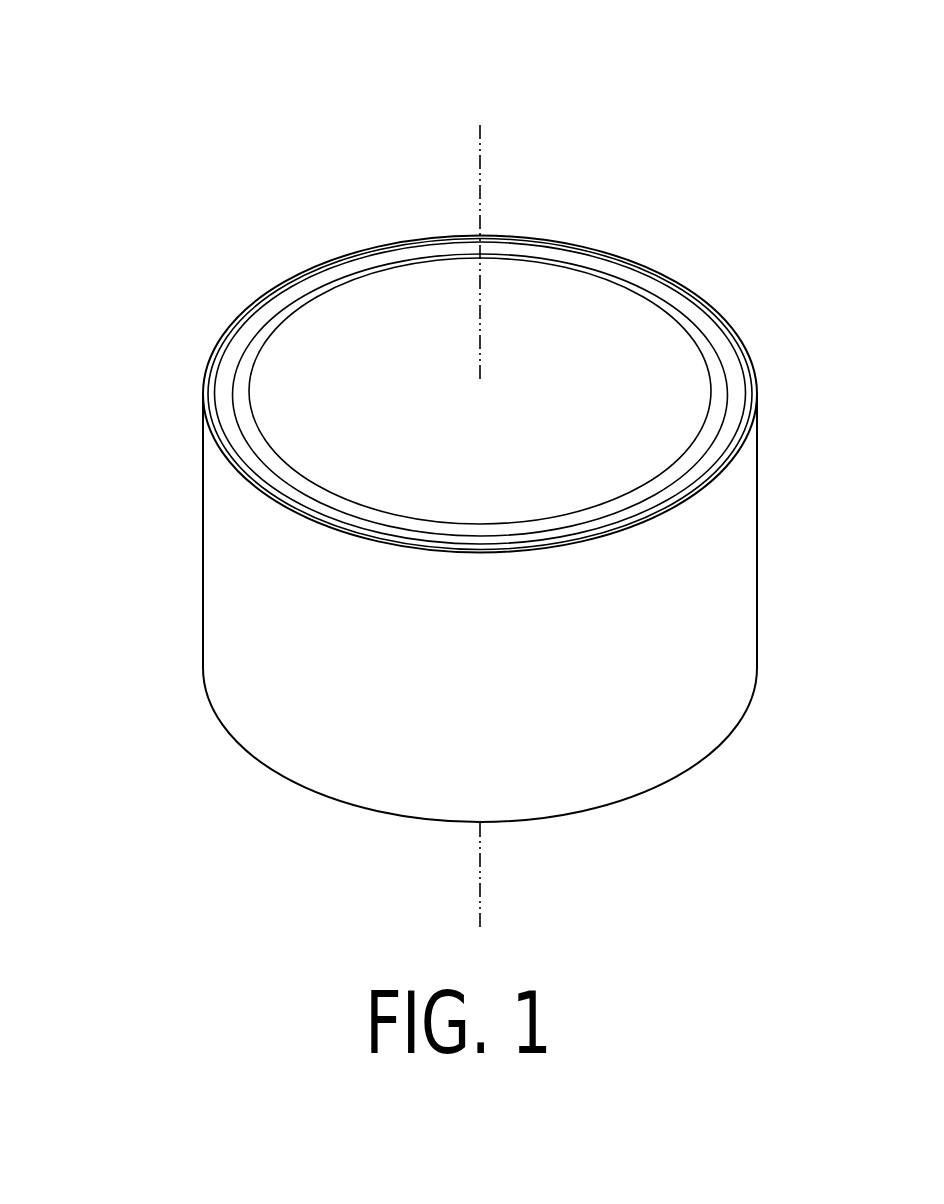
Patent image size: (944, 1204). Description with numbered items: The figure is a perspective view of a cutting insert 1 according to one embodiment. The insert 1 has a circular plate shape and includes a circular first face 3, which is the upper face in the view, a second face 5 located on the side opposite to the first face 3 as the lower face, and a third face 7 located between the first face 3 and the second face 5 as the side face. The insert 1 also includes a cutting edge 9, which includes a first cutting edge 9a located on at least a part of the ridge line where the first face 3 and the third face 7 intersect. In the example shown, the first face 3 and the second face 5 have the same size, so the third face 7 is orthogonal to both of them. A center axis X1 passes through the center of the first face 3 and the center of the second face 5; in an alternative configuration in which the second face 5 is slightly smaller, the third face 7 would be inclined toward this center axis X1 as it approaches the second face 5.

The insert 1 is at (461, 469).
The center axis X1 is at (482, 505).
The first face 3 is at (572, 322).
The second face 5 is at (375, 813).
The third face 7 is at (534, 655).
The cutting edge 9 is at (407, 444).
The first cutting edge 9a is at (317, 525).